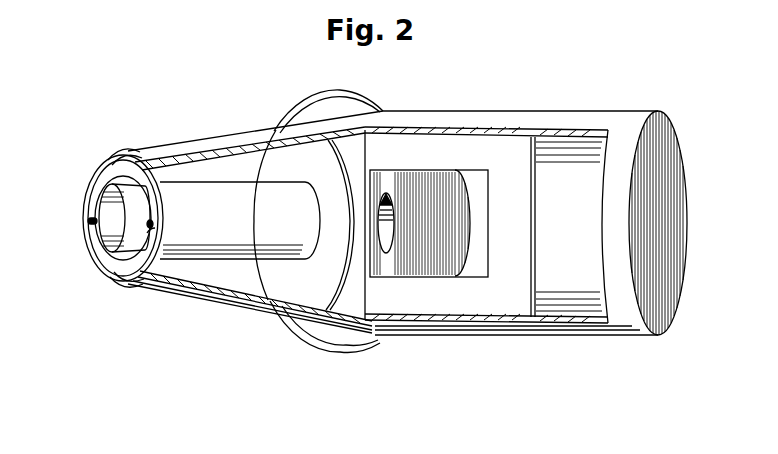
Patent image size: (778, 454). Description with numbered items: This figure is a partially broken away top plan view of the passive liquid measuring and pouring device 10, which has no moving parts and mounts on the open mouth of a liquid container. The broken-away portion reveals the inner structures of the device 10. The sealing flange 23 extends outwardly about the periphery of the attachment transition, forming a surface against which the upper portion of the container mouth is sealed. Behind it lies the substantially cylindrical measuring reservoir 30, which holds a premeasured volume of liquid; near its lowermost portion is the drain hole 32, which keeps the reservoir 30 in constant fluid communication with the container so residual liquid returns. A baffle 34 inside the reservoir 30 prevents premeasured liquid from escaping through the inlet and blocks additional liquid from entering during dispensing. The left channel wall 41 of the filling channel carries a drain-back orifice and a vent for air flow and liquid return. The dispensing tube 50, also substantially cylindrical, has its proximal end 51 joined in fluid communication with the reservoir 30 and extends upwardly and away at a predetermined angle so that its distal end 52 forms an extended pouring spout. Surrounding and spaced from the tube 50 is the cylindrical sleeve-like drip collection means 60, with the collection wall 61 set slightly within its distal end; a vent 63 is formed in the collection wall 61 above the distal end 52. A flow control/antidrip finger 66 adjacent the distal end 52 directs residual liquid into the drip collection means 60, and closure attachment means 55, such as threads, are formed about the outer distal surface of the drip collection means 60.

The liquid measuring and pouring device 10 is at (323, 358).
The sealing flange 23 is at (388, 102).
The measuring reservoir 30 is at (632, 98).
The drain hole 32 is at (469, 223).
The baffle 34 is at (496, 149).
The left channel wall 41 is at (283, 281).
The dispensing tube 50 is at (226, 195).
The proximal end 51 is at (384, 228).
The distal end 52 is at (95, 197).
The closure attachment means 55 is at (125, 153).
The drip collection means 60 is at (184, 146).
The collection wall 61 is at (134, 263).
The vent 63 is at (150, 227).
The flow control/antidrip finger 66 is at (87, 221).